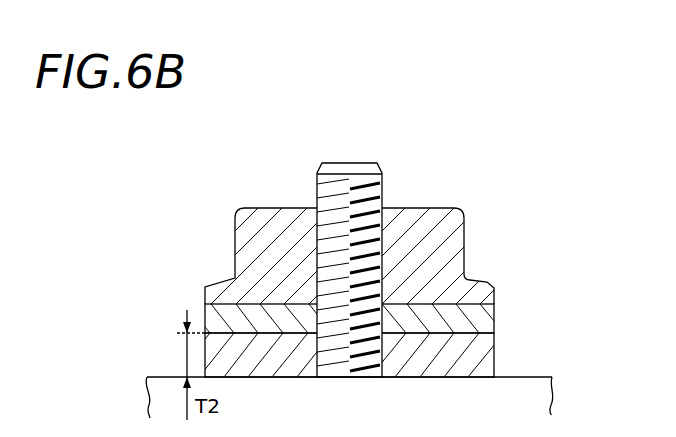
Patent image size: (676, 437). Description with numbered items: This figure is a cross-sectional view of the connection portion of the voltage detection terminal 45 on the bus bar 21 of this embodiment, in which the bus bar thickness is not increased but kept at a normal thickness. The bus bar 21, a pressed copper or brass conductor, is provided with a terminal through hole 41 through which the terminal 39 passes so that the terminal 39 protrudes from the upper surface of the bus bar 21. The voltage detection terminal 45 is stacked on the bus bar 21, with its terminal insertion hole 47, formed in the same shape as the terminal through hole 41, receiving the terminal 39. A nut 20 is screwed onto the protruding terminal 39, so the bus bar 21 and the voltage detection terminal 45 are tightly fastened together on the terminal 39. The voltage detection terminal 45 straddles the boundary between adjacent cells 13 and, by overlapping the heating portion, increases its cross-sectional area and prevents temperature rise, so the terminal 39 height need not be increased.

The cell 13 is at (166, 372).
The nut 20 is at (472, 226).
The bus bar 21 is at (504, 355).
The terminal 39 is at (350, 163).
The terminal through hole 41 is at (378, 358).
The voltage detection terminal 45 is at (504, 320).
The terminal insertion hole 47 is at (378, 318).